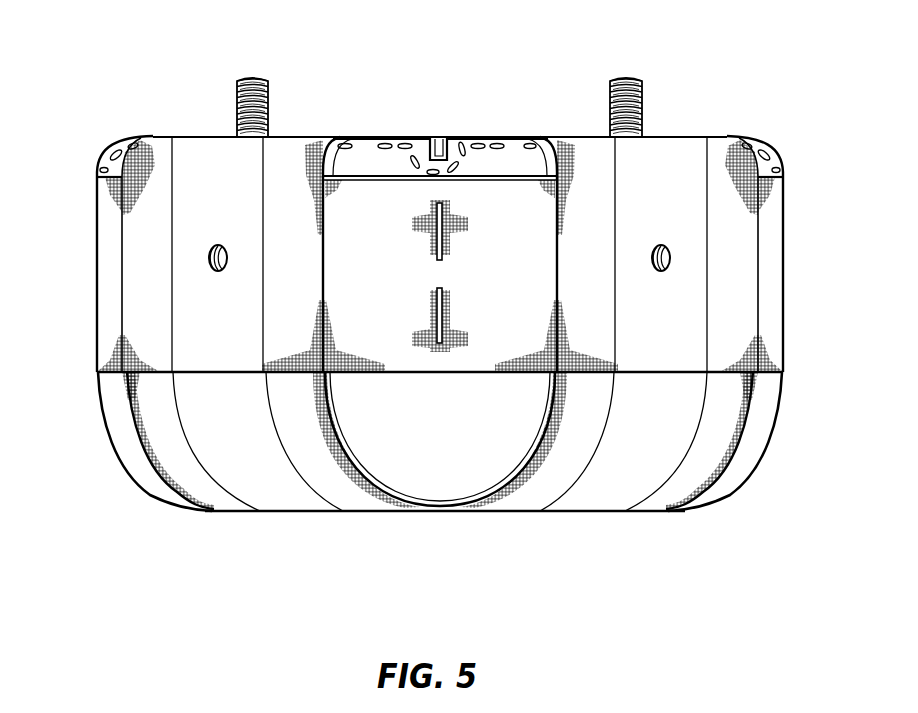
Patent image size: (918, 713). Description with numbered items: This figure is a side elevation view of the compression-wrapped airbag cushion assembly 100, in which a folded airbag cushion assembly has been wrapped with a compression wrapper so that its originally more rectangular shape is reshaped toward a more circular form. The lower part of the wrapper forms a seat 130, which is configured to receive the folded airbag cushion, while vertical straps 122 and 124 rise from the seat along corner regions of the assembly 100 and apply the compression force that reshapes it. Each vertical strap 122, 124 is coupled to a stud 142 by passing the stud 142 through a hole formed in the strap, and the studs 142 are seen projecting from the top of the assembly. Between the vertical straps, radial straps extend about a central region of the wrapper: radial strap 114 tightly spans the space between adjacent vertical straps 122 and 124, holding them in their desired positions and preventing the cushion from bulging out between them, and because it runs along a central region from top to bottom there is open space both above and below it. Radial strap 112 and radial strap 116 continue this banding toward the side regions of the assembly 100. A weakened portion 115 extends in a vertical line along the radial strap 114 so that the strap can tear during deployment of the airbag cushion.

The airbag cushion assembly 100 is at (732, 80).
The radial strap 112 is at (108, 338).
The radial strap 114 is at (487, 200).
The weakened portion 115 is at (442, 308).
The radial strap 116 is at (772, 340).
The vertical strap 122 is at (292, 157).
The vertical strap 124 is at (692, 148).
The seat 130 is at (302, 515).
The stud 142 is at (250, 80).